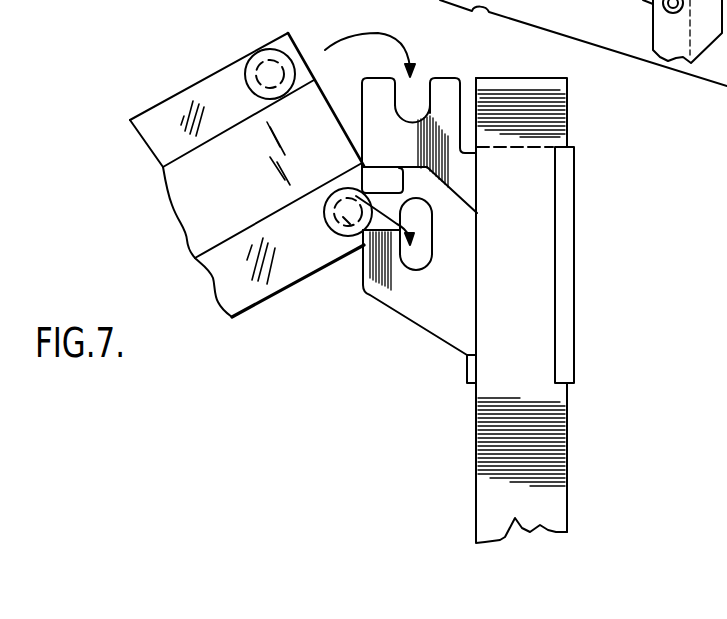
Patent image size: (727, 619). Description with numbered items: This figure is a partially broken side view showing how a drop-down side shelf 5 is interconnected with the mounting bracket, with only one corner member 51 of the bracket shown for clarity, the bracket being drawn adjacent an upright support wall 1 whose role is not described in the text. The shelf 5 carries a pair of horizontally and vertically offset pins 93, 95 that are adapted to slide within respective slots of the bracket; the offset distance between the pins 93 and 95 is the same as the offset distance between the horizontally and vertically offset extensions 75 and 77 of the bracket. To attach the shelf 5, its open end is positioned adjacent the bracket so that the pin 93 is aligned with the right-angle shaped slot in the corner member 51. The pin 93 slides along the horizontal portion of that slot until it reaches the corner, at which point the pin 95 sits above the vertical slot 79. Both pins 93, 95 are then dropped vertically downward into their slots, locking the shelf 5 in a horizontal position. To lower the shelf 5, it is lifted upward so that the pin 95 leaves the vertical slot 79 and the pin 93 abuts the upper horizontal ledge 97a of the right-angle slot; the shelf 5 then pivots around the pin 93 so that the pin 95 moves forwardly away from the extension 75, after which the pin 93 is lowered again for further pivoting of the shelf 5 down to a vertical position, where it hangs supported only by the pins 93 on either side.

The wall / frame member 1 is at (562, 428).
The shelf 5 is at (158, 105).
The corner member 51 is at (343, 318).
The extension 75 is at (452, 85).
The extension 77 is at (432, 326).
The vertical slot 79 is at (421, 77).
The pin 93 is at (340, 223).
The pin 95 is at (268, 64).
The upper horizontal ledge 97a is at (403, 182).